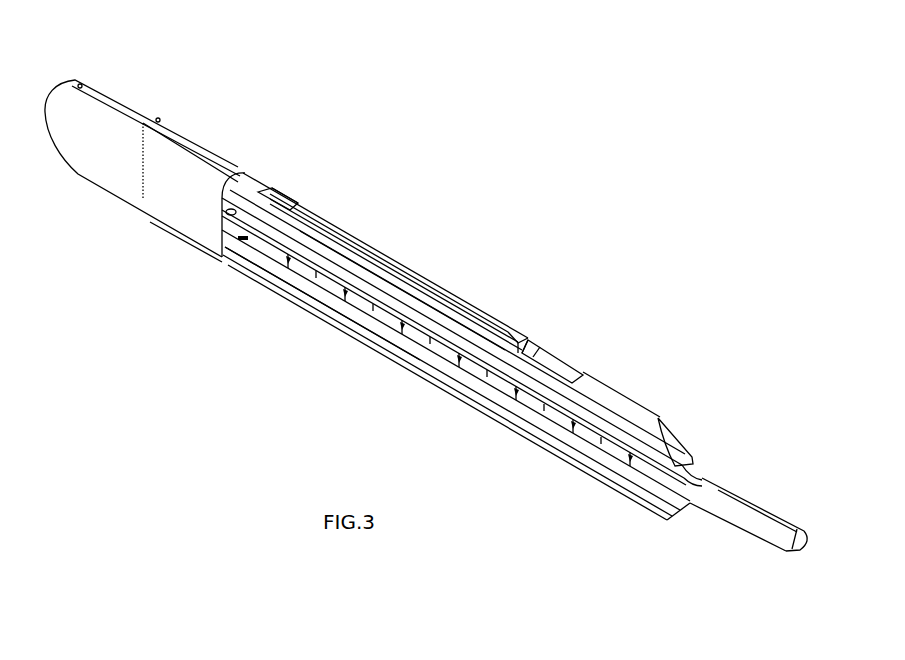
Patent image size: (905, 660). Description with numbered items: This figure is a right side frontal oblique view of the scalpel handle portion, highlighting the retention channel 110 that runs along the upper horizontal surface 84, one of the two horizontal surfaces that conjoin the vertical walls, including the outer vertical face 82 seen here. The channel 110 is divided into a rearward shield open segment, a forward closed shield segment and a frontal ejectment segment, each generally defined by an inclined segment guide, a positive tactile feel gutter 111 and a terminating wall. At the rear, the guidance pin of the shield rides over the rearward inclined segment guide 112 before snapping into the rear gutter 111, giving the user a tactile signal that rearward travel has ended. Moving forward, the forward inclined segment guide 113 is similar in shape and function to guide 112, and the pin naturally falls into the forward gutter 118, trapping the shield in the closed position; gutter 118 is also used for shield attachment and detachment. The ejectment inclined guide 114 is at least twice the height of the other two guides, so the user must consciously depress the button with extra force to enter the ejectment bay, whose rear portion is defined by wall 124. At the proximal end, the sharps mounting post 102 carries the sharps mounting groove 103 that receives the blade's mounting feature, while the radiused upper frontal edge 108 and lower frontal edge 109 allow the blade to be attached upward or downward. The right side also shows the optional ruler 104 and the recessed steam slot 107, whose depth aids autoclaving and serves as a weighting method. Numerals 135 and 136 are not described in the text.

The upper horizontal surface 84 is at (243, 187).
The positive tactile feel gutter 111 is at (286, 192).
The rearward inclined segment guide 112 is at (298, 200).
The channel 110 is at (327, 220).
The channel 135 is at (344, 238).
The housing top surface 136 is at (373, 243).
The forward inclined segment guide 113 is at (514, 329).
The forward gutter 118 is at (524, 340).
The ejectment inclined guide 114 is at (549, 340).
The upper frontal edge 108 is at (681, 434).
The sharps mounting post 102 is at (723, 480).
The sharps mounting groove 103 is at (766, 493).
The lower frontal edge 109 is at (679, 517).
The ruler 104 is at (537, 405).
The wall 124 is at (504, 348).
The outer vertical face 82 is at (405, 313).
The steam slot 107 is at (280, 277).